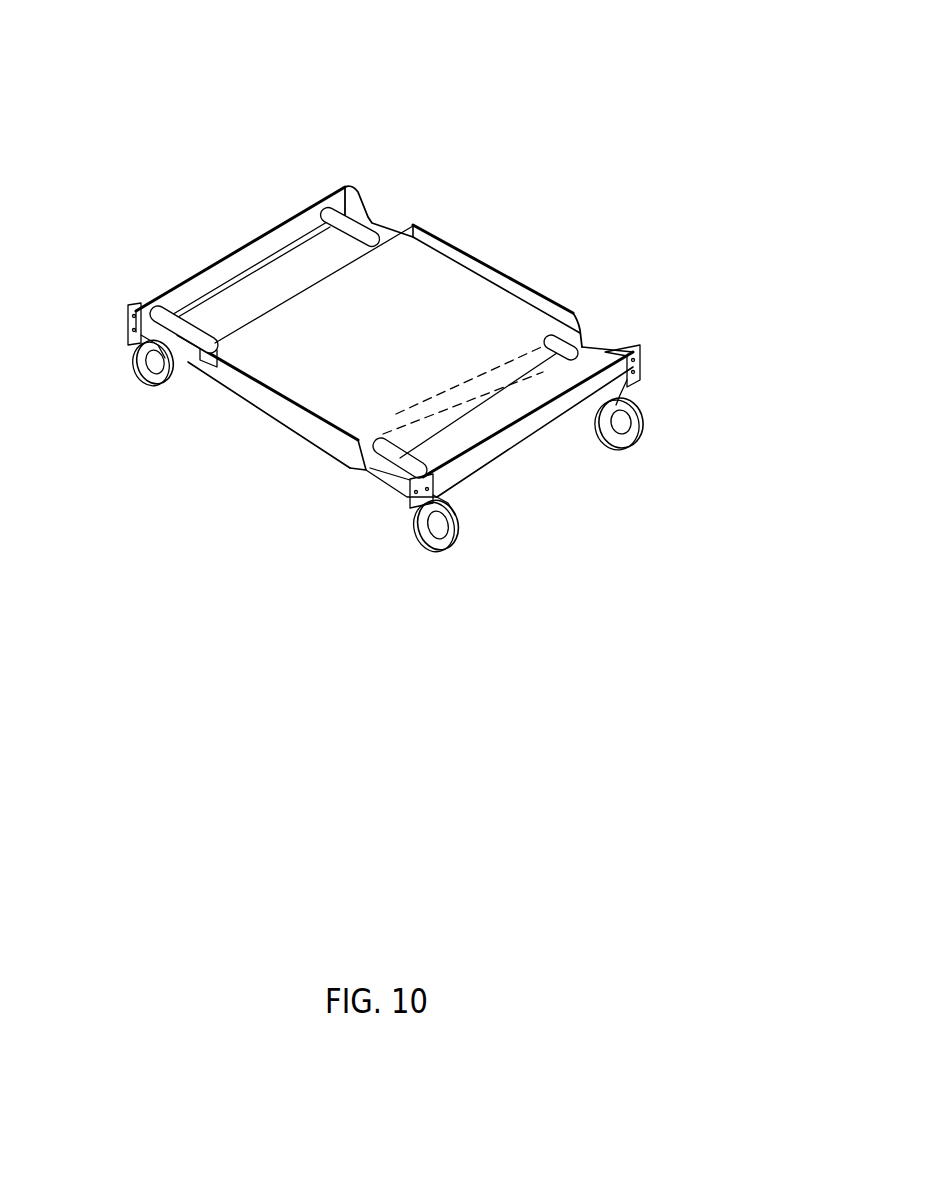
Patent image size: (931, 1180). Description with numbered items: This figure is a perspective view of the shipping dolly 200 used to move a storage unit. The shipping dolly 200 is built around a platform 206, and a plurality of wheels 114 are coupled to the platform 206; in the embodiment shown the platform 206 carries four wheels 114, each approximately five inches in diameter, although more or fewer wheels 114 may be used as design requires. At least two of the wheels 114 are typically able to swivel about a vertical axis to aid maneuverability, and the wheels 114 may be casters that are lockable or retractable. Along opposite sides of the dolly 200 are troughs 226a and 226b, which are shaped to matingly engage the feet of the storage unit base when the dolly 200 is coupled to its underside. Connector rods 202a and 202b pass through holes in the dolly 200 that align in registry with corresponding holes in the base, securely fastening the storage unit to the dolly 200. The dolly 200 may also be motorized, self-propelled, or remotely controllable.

The shipping dolly 200 is at (435, 352).
The trough 226a is at (263, 290).
The trough 226b is at (480, 422).
The connector rod 202a is at (580, 355).
The connector rod 202b is at (400, 458).
The platform 206 is at (400, 355).
The wheels 114 is at (433, 540).